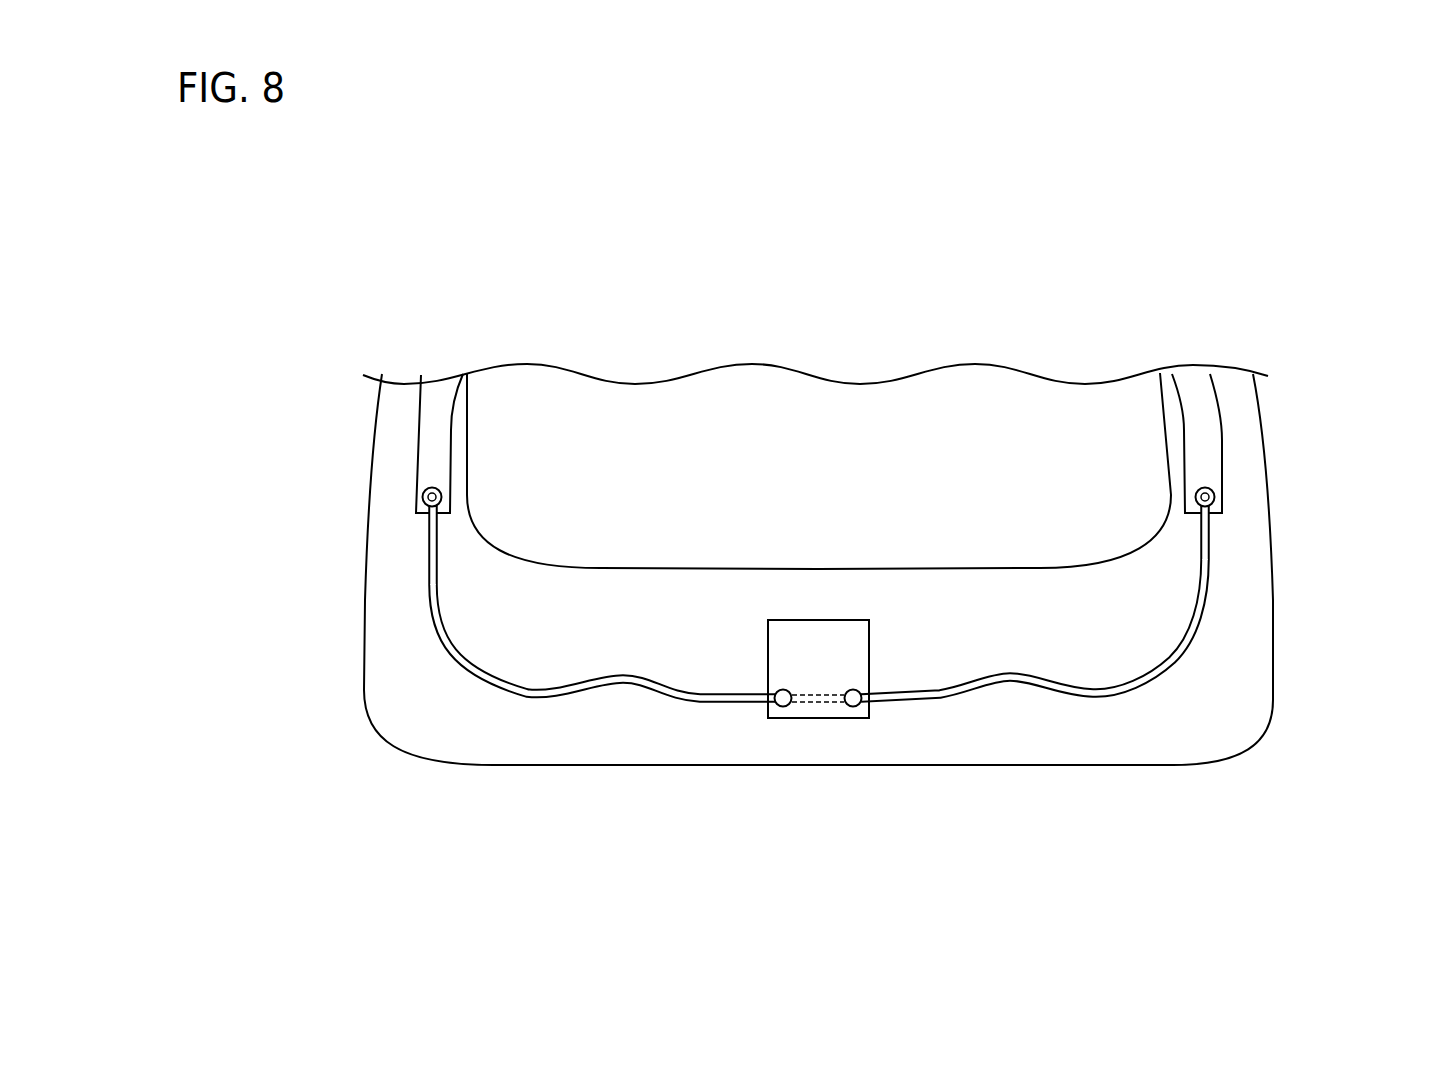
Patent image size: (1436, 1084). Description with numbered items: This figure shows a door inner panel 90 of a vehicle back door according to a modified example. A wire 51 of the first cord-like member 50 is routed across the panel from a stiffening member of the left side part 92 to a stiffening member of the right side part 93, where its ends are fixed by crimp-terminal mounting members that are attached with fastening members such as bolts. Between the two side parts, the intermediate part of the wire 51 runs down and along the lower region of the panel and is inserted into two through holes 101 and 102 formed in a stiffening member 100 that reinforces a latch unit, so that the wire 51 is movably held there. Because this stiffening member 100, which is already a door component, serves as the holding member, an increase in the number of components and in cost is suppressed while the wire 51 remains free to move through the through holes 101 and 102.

The door inner panel 90 is at (358, 703).
The left side part 92 is at (395, 423).
The right side part 93 is at (1240, 413).
The wire 51 is at (545, 697).
The first cord-like member 50 is at (612, 690).
The stiffening member 100 is at (813, 720).
The through hole 101 is at (777, 720).
The through hole 102 is at (848, 716).